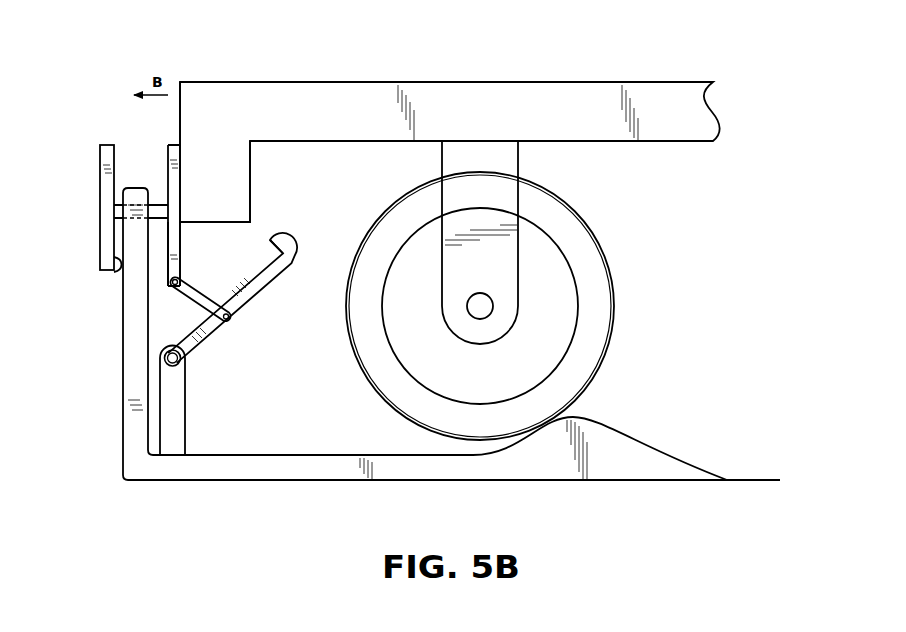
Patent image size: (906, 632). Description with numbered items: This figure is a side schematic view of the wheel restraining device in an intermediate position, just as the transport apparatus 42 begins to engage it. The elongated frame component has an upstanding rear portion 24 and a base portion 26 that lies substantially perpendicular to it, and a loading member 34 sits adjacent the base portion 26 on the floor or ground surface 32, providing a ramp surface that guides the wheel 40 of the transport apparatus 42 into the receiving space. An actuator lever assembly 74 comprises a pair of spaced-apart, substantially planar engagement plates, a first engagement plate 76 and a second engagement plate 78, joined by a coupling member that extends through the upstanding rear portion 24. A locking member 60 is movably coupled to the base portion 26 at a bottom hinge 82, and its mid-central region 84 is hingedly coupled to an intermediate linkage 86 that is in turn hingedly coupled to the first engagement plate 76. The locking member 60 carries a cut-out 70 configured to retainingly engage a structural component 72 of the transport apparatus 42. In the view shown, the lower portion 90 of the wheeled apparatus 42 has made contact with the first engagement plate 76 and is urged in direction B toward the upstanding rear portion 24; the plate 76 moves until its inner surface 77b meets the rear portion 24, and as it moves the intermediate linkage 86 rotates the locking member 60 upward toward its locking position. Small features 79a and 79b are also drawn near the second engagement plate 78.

The upstanding rear portion 24 is at (135, 363).
The base portion 26 is at (272, 470).
The floor or ground surface 32 is at (753, 485).
The loading member 34 is at (560, 472).
The wheel 40 is at (587, 258).
The transport apparatus 42 is at (695, 107).
The locking member 60 is at (257, 316).
The cut-out 70 is at (272, 262).
The structural component 72 is at (238, 195).
The actuator lever assembly 74 is at (131, 173).
The first engagement plate 76 is at (173, 237).
The inner surface 77b is at (167, 182).
The second engagement plate 78 is at (107, 145).
The lower tab 79a is at (118, 268).
The upper tab 79b is at (100, 193).
The bottom hinge 82 is at (190, 352).
The mid-central region 84 is at (235, 298).
The intermediate linkage 86 is at (190, 292).
The lower portion 90 is at (180, 112).